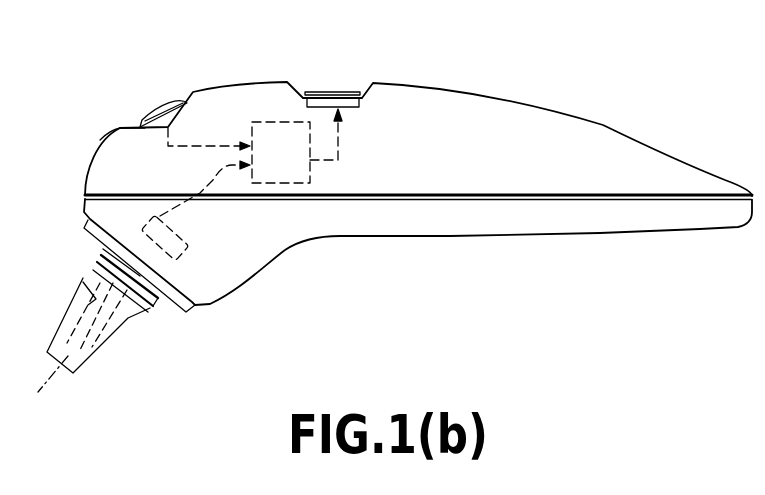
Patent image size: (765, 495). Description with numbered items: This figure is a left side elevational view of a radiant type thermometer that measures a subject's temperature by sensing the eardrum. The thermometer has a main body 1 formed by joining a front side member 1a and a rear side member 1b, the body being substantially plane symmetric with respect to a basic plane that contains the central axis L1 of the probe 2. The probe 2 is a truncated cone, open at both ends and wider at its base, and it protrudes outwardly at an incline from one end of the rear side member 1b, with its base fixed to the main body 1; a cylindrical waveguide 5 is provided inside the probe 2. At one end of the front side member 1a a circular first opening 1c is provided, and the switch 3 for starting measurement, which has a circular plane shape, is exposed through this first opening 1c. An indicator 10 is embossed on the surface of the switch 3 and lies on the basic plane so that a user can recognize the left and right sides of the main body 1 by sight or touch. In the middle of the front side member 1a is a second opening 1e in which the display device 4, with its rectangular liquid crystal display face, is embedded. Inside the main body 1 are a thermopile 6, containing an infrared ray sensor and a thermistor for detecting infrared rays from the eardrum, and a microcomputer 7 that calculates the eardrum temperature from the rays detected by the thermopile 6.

The main body 1 is at (418, 189).
The front side member 1a is at (660, 170).
The rear side member 1b is at (680, 217).
The first opening 1c is at (143, 119).
The second opening 1e is at (343, 90).
The probe 2 is at (123, 320).
The switch 3 is at (140, 127).
The display device 4 is at (347, 107).
The waveguide 5 is at (83, 282).
The thermopile 6 is at (190, 245).
The microcomputer 7 is at (253, 121).
The indicator 10 is at (163, 100).
The central axis L1 is at (50, 380).